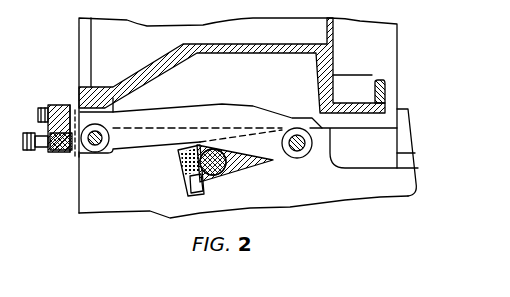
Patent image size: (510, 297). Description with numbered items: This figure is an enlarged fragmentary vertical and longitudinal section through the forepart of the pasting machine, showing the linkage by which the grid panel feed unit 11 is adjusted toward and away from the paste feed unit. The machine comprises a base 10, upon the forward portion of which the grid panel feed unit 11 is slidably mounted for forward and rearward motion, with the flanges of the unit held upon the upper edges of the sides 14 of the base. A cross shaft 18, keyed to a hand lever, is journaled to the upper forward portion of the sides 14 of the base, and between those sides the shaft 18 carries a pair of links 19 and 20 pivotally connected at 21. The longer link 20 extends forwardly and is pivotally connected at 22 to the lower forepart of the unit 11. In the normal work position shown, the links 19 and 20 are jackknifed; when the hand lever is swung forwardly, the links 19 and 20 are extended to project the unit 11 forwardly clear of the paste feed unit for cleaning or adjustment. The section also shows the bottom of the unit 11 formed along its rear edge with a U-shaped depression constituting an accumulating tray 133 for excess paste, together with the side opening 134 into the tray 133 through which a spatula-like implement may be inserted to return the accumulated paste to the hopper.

The base 10 is at (107, 216).
The grid panel feed unit 11 is at (78, 43).
The sides of the base 14 is at (300, 190).
The cross shaft 18 is at (218, 180).
The link 19 is at (265, 172).
The longer link 20 is at (162, 111).
The pivot connection 21 is at (300, 143).
The pivot connection 22 is at (82, 157).
The accumulating tray 133 is at (381, 92).
The side opening 134 is at (372, 75).